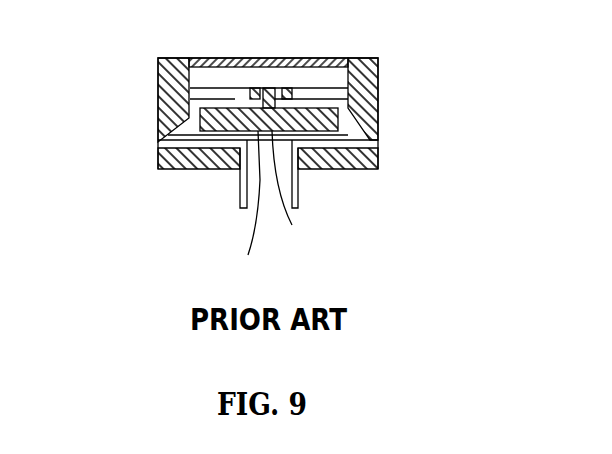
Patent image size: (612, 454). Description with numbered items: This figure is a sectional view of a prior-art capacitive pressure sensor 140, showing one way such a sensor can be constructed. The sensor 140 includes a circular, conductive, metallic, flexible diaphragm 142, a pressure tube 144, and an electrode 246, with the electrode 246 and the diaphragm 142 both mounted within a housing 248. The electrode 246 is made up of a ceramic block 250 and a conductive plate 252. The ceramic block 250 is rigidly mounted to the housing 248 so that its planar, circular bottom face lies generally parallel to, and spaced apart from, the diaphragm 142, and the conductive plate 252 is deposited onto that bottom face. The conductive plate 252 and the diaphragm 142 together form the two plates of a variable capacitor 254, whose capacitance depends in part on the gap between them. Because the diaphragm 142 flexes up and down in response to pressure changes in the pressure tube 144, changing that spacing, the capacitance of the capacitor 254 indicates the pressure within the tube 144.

The capacitive pressure sensor 140 is at (398, 95).
The housing 248 is at (157, 78).
The electrode 246 is at (318, 100).
The ceramic block 250 is at (237, 108).
The pressure tube 144 is at (238, 193).
The variable capacitor 254 is at (315, 143).
The conductive plate 252 is at (247, 212).
The diaphragm 142 is at (301, 197).